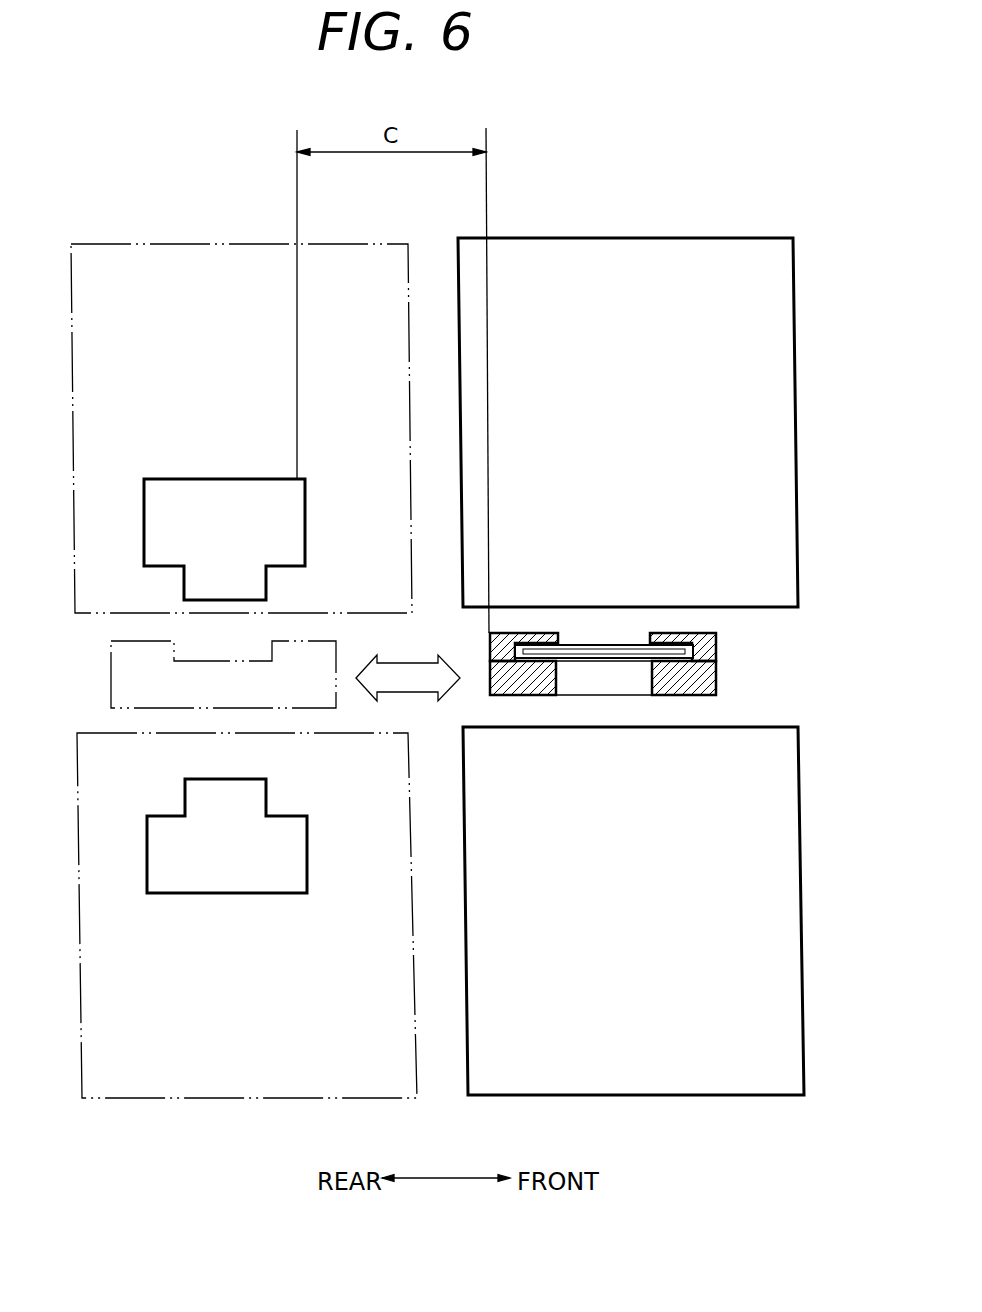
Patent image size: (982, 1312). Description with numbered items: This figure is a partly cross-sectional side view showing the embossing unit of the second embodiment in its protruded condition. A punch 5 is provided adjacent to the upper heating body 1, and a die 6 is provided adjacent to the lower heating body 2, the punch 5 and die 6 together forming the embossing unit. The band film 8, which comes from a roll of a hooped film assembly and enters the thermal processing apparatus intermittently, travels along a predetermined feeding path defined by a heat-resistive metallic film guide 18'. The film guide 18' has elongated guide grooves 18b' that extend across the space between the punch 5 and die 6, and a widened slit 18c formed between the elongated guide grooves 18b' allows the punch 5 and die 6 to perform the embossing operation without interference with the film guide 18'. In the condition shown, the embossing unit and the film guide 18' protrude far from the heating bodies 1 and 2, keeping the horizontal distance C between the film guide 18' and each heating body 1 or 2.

The upper heating body 1 is at (176, 484).
The lower heating body 2 is at (227, 880).
The punch 5 is at (777, 413).
The die 6 is at (787, 1018).
The band film 8 is at (604, 647).
The film guide 18' is at (603, 666).
The elongated guide grooves 18b' is at (603, 642).
The widened slit 18c is at (623, 640).